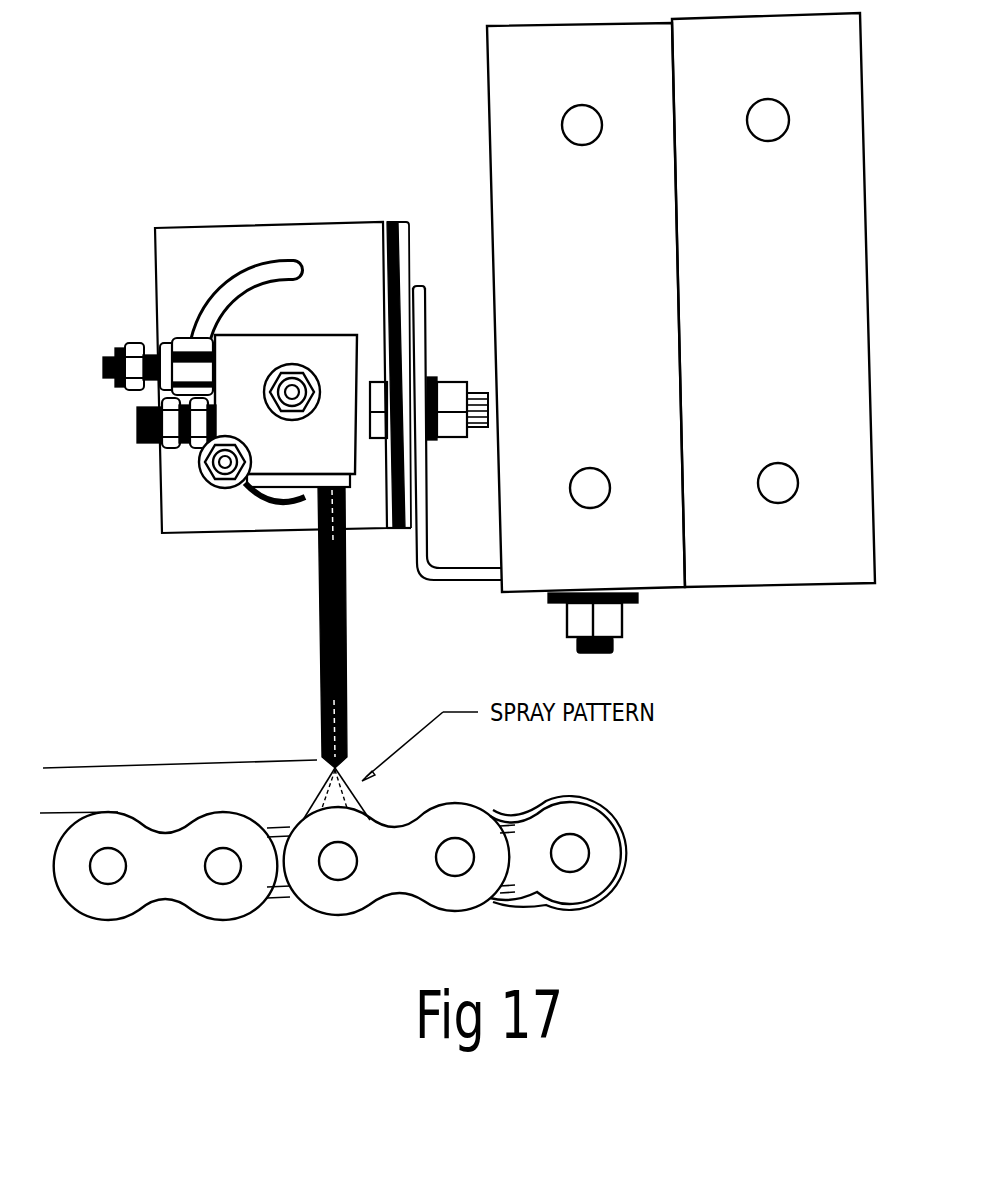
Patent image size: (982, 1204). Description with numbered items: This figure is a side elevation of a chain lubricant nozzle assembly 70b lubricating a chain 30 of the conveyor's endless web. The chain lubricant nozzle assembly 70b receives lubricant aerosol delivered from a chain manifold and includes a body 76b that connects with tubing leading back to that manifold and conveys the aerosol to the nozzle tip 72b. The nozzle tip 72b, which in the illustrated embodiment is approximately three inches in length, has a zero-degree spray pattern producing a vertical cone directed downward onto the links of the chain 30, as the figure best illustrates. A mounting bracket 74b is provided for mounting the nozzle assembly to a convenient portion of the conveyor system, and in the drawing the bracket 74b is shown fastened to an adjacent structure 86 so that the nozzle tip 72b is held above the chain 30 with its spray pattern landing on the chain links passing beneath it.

The chain lubricant nozzle assembly 70b is at (312, 216).
The nozzle tip 72b is at (347, 650).
The mounting bracket 74b is at (388, 222).
The body 76b is at (277, 342).
The mounting block 86 is at (715, 591).
The chain 30 is at (608, 812).